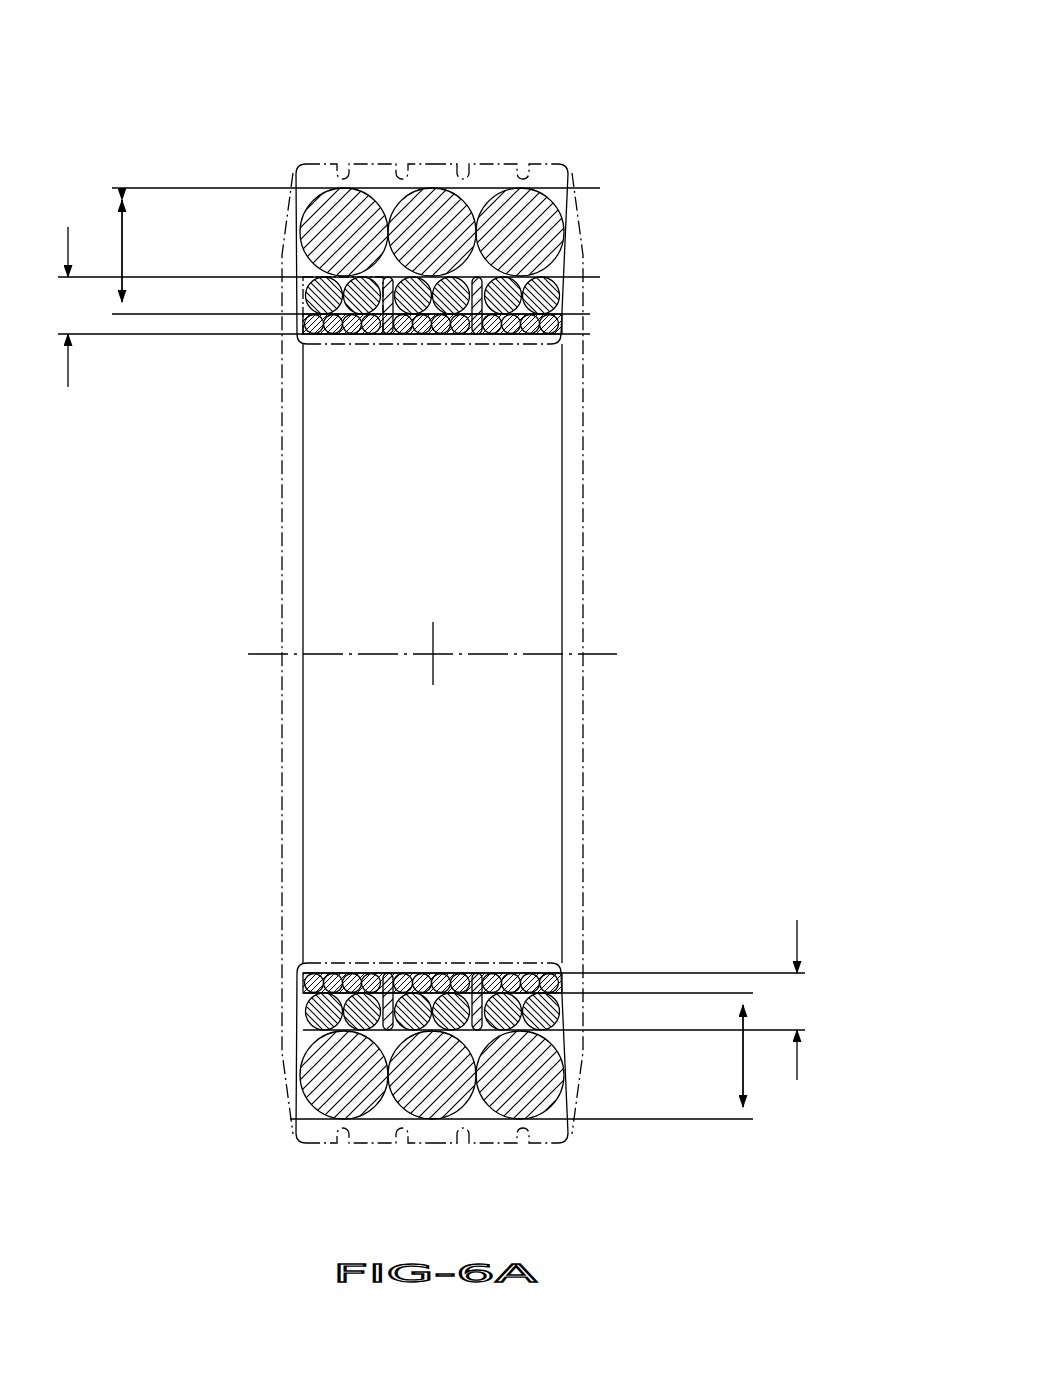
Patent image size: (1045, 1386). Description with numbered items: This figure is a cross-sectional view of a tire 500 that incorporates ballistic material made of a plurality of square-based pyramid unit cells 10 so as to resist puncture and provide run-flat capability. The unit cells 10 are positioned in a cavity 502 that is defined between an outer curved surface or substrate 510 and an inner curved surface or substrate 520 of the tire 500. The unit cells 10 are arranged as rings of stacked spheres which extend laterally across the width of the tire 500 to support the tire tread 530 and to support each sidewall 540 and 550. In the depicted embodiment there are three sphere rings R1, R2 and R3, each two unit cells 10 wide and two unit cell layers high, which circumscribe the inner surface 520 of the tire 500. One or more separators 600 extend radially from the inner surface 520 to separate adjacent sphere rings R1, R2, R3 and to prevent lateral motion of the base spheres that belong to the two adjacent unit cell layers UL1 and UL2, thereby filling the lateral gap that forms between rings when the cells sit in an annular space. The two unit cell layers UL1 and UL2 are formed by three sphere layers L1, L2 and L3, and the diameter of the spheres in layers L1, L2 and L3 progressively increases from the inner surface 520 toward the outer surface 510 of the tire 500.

The tire 500 is at (431, 611).
The cavity 502 is at (390, 187).
The outer curved surface or substrate 510 is at (508, 163).
The tire tread 530 is at (362, 163).
The sidewall 540 is at (287, 289).
The sidewall 550 is at (578, 288).
The inner curved surface or substrate 520 is at (520, 330).
The separator 600 is at (473, 333).
The square-based pyramid unit cell 10 is at (295, 227).
The sphere ring R1 is at (553, 194).
The sphere ring R2 is at (434, 186).
The sphere ring R3 is at (315, 214).
The sphere layer L1 is at (546, 331).
The sphere layer L2 is at (522, 298).
The sphere layer L3 is at (425, 652).
The unit cell layer UL1 is at (432, 653).
The unit cell layer UL2 is at (432, 653).